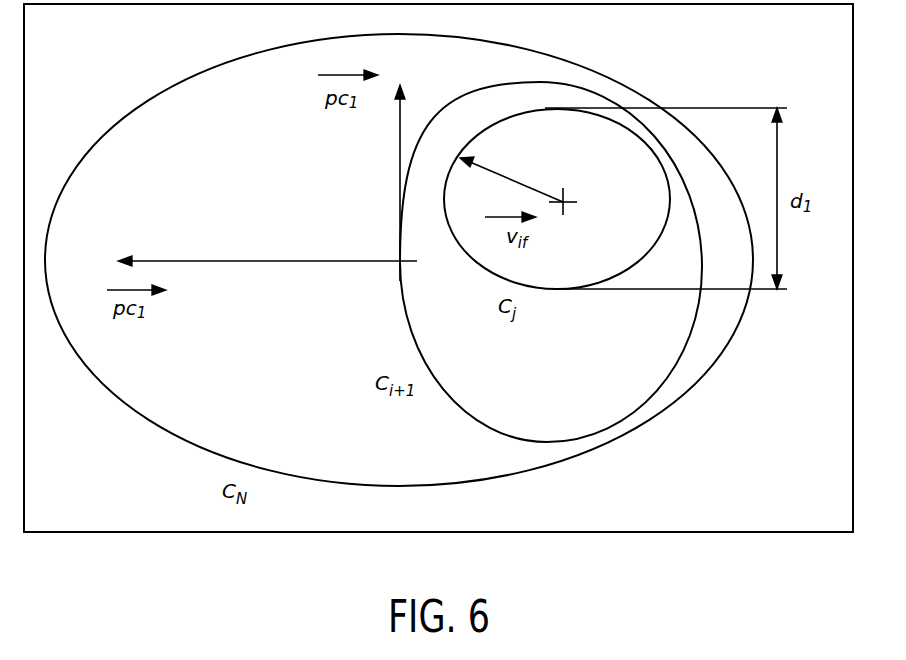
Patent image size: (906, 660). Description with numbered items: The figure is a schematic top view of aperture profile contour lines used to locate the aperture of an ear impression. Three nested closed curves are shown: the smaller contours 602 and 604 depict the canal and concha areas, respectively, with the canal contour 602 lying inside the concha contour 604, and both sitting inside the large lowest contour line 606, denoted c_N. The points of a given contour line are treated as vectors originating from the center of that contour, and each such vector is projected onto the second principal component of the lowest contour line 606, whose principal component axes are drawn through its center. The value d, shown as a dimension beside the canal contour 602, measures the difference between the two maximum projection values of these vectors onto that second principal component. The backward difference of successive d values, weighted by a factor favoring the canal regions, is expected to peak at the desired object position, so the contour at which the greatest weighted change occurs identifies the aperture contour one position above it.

The canal contour 602 is at (592, 299).
The concha contour 604 is at (450, 110).
The lowest contour line 606 is at (178, 78).